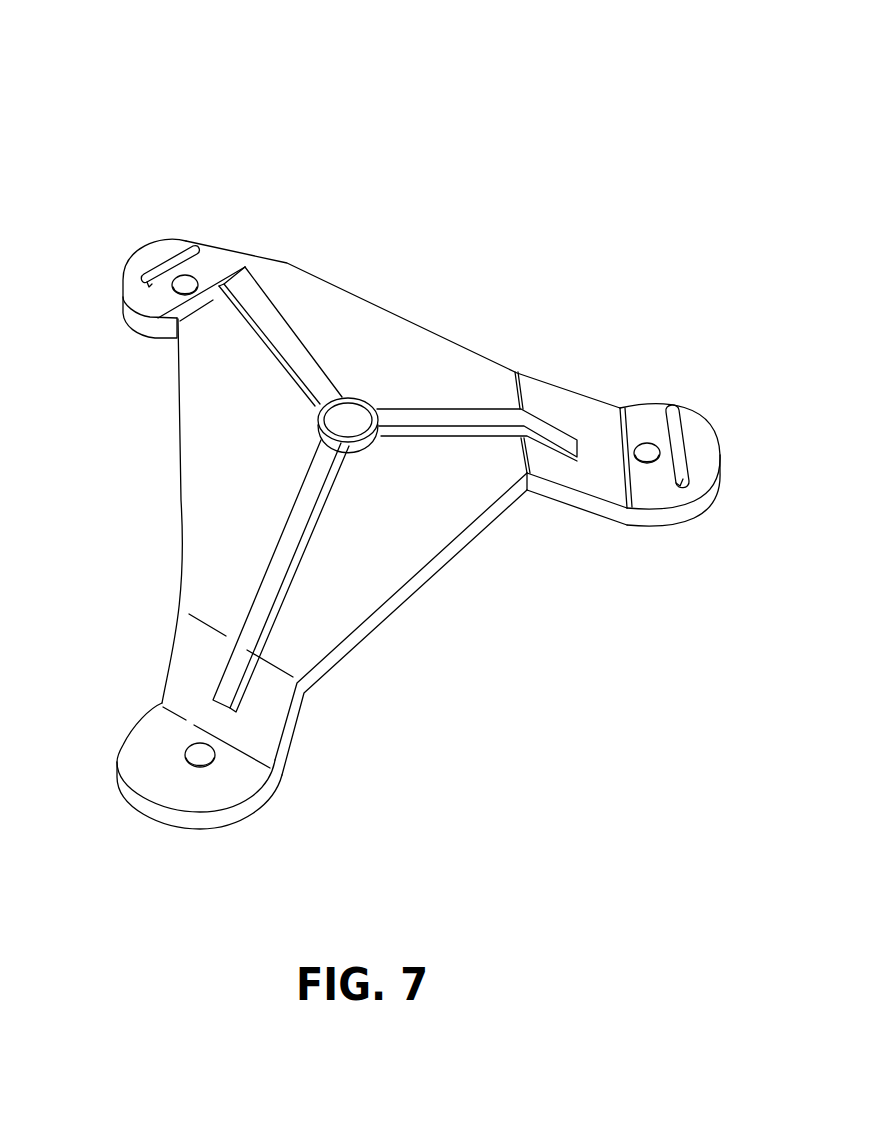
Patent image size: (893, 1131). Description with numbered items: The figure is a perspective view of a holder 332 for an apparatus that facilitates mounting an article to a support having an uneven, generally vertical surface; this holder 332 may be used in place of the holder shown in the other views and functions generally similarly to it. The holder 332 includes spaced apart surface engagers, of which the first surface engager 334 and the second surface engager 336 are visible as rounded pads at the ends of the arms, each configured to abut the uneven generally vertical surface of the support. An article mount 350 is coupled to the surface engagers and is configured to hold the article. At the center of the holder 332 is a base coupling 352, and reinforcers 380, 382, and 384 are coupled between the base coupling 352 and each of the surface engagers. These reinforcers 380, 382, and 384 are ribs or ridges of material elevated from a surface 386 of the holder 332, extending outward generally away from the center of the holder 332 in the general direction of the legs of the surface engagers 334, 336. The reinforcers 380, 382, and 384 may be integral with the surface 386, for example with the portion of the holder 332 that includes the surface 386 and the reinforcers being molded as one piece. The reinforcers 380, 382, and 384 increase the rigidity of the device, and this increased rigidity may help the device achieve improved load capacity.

The holder 332 is at (508, 104).
The first surface engager 334 is at (148, 255).
The second surface engager 336 is at (693, 433).
The article mount 350 is at (212, 457).
The base coupling 352 is at (355, 385).
The reinforcer 380 is at (272, 352).
The reinforcer 382 is at (438, 420).
The reinforcer 384 is at (272, 552).
The surface 386 is at (230, 497).